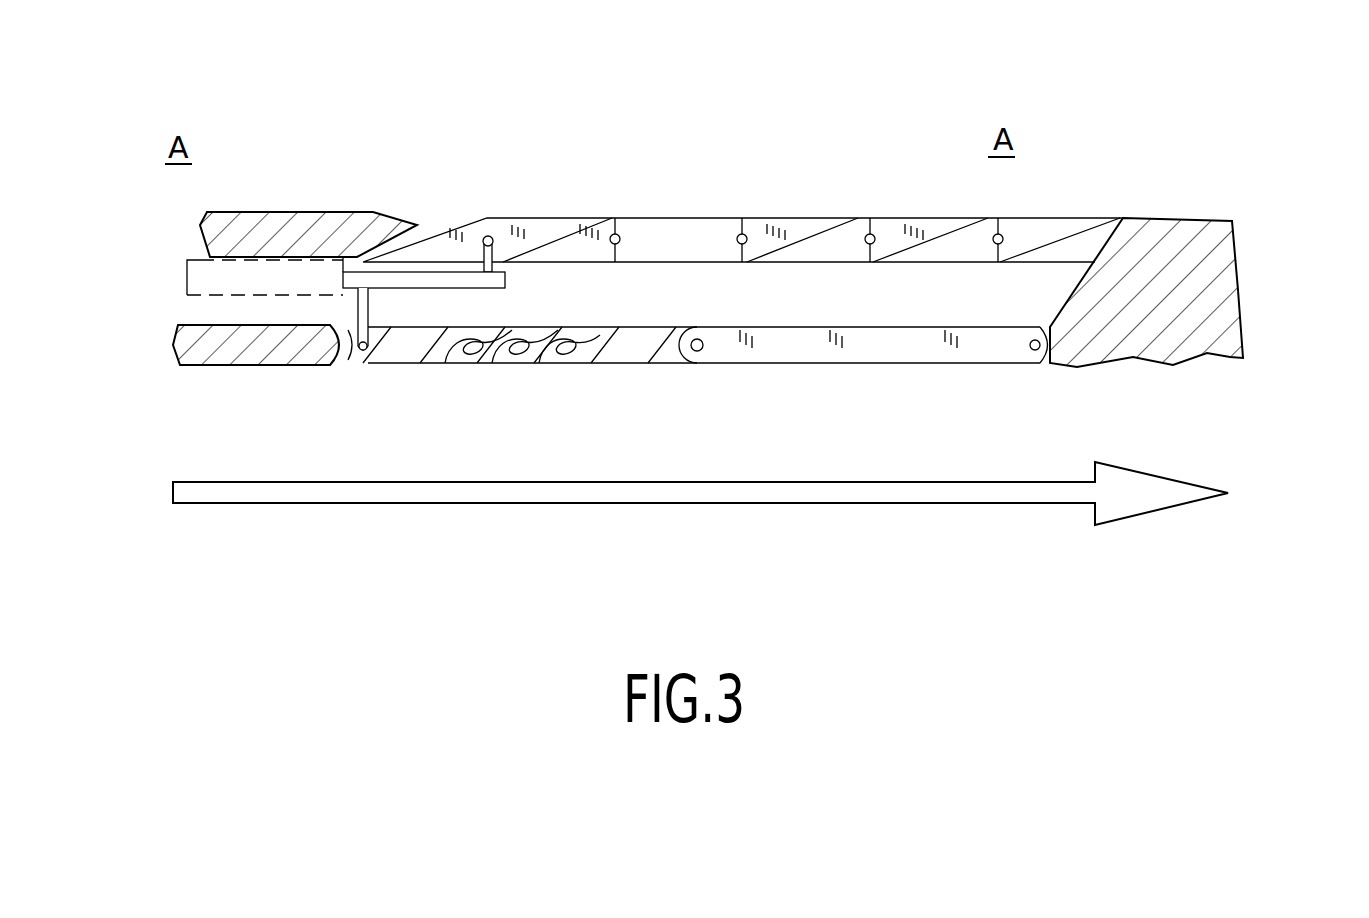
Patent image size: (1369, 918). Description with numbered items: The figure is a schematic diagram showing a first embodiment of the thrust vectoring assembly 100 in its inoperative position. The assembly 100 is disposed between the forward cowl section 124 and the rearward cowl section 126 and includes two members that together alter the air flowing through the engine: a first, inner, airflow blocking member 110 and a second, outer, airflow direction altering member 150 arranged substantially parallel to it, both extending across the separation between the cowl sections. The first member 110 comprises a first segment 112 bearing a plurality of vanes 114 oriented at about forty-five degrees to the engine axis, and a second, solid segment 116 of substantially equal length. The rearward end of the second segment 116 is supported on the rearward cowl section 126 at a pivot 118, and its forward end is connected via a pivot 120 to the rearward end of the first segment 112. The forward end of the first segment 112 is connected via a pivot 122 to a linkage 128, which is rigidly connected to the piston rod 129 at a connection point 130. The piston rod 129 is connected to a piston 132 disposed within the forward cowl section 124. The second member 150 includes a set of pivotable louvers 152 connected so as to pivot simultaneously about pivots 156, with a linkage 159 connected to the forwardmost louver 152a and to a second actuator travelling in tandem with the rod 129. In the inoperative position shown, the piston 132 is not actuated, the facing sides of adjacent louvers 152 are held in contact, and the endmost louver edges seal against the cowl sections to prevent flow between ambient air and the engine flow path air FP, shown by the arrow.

The thrust vectoring assembly 100 is at (1112, 138).
The first, inner, airflow blocking member 110 is at (655, 408).
The first segment 112 is at (407, 368).
The vanes 114 is at (537, 363).
The second, solid segment 116 is at (908, 365).
The pivot 118 is at (1040, 367).
The pivot 120 is at (717, 365).
The pivot 122 is at (358, 363).
The forward cowl section 124 is at (187, 235).
The rearward cowl section 126 is at (1233, 278).
The linkage 128 is at (380, 322).
The piston rod 129 is at (433, 272).
The connection point 130 is at (338, 275).
The piston 132 is at (187, 273).
The second, outer, airflow direction altering member 150 is at (600, 108).
The pivotable louvers 152 is at (665, 235).
The forwardmost louver 152a is at (533, 228).
The pivots 156 is at (737, 242).
The linkage 159 is at (517, 262).
The engine flow path air FP is at (707, 503).